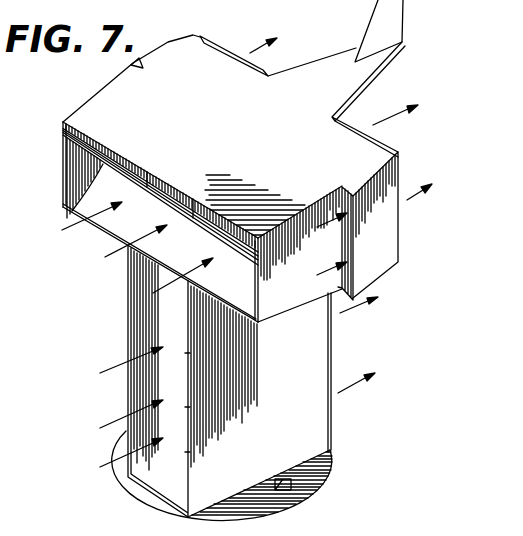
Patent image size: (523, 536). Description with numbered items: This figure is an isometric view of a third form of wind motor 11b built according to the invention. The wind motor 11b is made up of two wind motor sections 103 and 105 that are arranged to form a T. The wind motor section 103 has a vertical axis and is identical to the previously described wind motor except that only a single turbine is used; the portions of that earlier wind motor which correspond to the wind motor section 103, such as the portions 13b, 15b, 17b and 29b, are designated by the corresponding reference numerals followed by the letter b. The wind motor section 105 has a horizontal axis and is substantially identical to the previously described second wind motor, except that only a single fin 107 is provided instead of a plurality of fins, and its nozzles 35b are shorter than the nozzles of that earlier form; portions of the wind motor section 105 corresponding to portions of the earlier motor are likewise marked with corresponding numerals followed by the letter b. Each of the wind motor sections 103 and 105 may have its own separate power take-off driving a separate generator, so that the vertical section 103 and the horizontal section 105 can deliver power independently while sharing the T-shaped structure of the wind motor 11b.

The wind motor 11b is at (97, 327).
The housing 13b is at (324, 243).
The base plate 15b is at (300, 483).
The air inlet passages 17b is at (93, 432).
The vertical duct body 29b is at (300, 412).
The nozzles 35b is at (167, 43).
The wind motor section 103 is at (116, 390).
The wind motor section 105 is at (100, 88).
The fin 107 is at (385, 20).